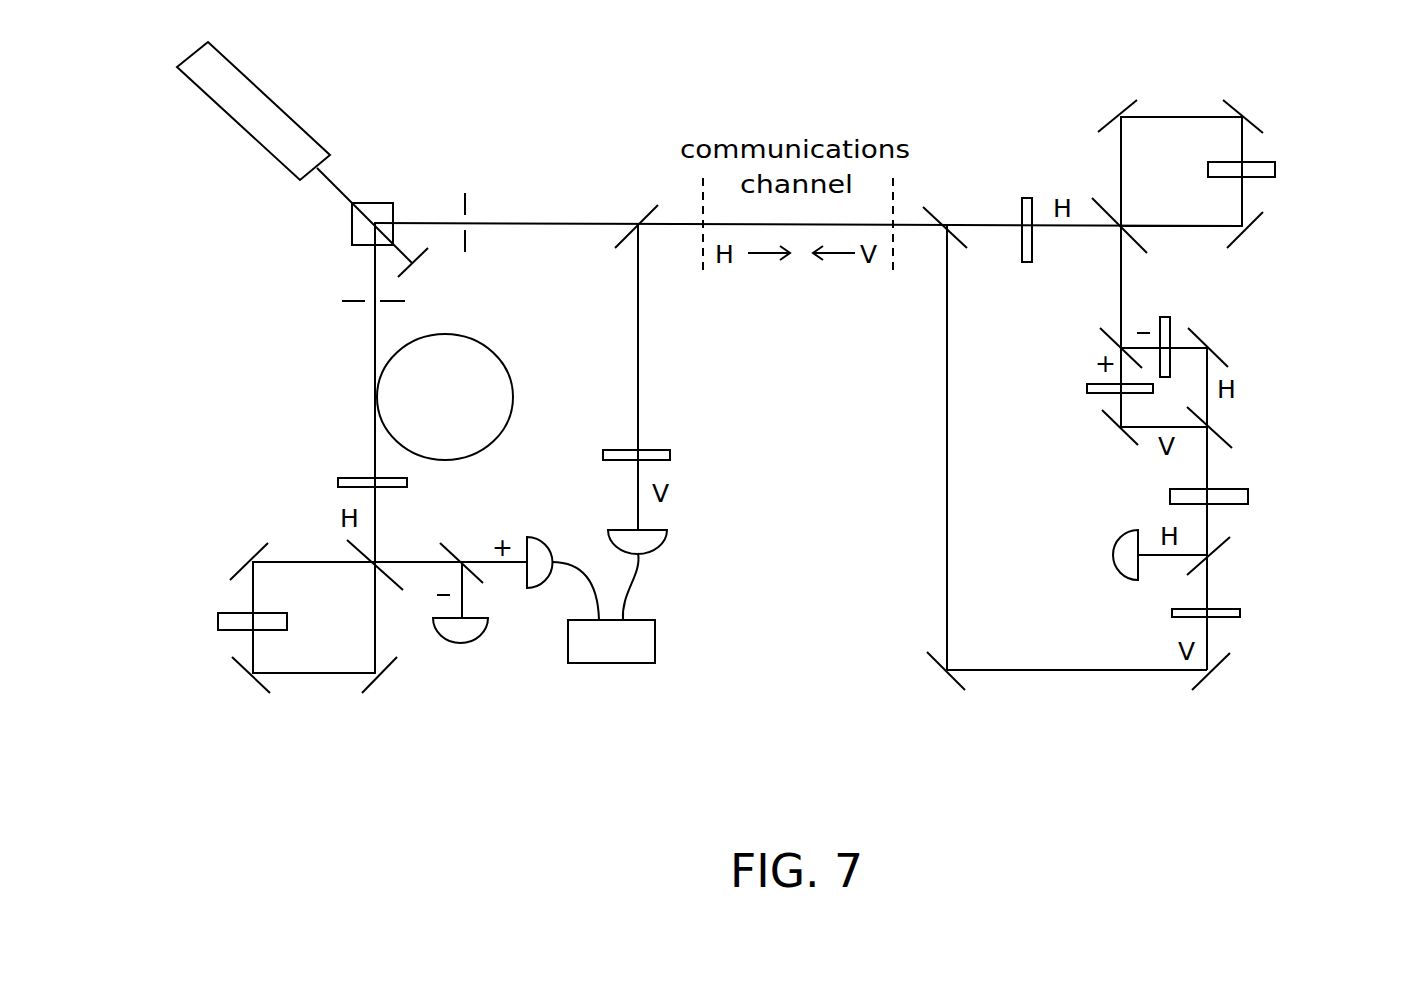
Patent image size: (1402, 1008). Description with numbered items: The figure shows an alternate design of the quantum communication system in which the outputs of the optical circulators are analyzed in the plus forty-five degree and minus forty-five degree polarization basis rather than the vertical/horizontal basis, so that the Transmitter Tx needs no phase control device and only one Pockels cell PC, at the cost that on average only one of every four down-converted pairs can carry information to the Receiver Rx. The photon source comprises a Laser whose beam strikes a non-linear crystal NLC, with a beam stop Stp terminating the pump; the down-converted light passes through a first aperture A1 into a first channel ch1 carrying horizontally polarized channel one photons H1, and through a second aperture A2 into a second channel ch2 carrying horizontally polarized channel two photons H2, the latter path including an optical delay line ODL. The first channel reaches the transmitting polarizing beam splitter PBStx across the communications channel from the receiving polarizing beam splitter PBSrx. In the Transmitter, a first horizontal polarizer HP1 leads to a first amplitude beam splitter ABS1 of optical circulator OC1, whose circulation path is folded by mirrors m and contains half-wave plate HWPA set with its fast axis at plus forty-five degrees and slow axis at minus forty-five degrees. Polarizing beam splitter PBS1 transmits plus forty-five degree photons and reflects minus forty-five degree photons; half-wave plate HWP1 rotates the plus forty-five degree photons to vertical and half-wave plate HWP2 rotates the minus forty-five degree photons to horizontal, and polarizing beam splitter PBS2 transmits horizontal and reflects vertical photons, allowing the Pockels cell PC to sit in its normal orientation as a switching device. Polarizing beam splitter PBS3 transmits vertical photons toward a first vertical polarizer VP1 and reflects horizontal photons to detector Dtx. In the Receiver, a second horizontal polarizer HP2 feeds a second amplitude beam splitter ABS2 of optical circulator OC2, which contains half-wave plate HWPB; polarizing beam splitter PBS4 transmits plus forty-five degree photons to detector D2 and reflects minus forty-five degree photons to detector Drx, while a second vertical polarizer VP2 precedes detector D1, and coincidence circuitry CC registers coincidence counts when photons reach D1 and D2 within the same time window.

The Transmitter Tx is at (996, 101).
The Receiver Rx is at (196, 461).
The laser Laser is at (294, 152).
The non-linear crystal NLC is at (326, 224).
The beam stop Stp is at (436, 273).
The first aperture A1 is at (462, 205).
The second aperture A2 is at (347, 301).
The horizontally polarized channel 1 photon H1 is at (517, 201).
The horizontally polarized channel 2 photon H2 is at (339, 344).
The first channel ch1 is at (527, 254).
The second channel ch2 is at (326, 399).
The optical delay line ODL is at (445, 397).
The receiving polarizing beam splitter PBSrx is at (634, 210).
The transmitting polarizing beam splitter PBStx is at (959, 210).
The first horizontal polarizer HP1 is at (1025, 248).
The second horizontal polarizer HP2 is at (332, 484).
The first amplitude beam splitter ABS1 is at (1155, 224).
The second amplitude beam splitter ABS2 is at (340, 570).
The optical circulator OC1 is at (1181, 151).
The optical circulator OC2 is at (314, 640).
The half-wave plate HWPA is at (1299, 204).
The half-wave plate HWPB is at (197, 656).
The half-wave plate HWP1 is at (1061, 389).
The half-wave plate HWP2 is at (1190, 329).
The polarizing beam splitter PBS1 is at (1073, 341).
The polarizing beam splitter PBS2 is at (1253, 435).
The polarizing beam splitter PBS3 is at (1248, 558).
The polarizing beam splitter PBS4 is at (447, 544).
The Pockels cell PC is at (1240, 498).
The detector Dtx is at (1090, 555).
The detector Drx is at (457, 648).
The detector D1 is at (661, 543).
The detector D2 is at (546, 545).
The coincidence circuitry CC is at (636, 608).
The first vertical polarizer VP1 is at (1168, 614).
The second vertical polarizer VP2 is at (676, 454).
The mirror m is at (745, 397).